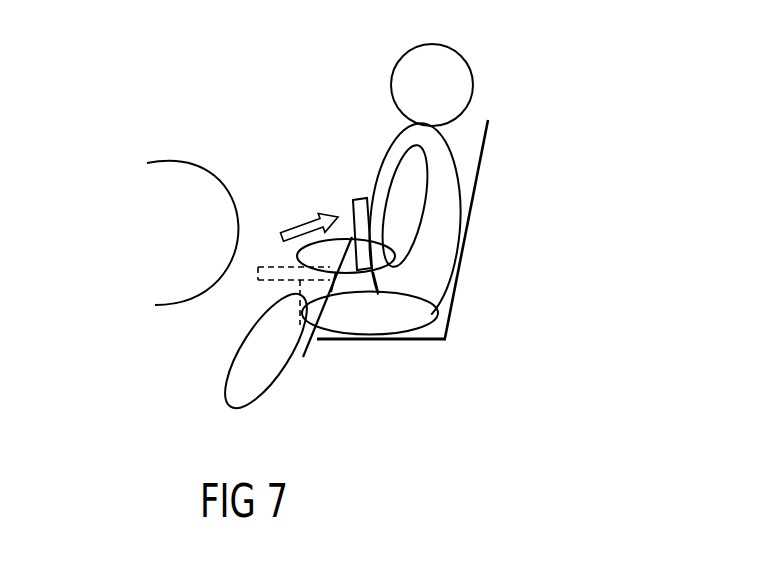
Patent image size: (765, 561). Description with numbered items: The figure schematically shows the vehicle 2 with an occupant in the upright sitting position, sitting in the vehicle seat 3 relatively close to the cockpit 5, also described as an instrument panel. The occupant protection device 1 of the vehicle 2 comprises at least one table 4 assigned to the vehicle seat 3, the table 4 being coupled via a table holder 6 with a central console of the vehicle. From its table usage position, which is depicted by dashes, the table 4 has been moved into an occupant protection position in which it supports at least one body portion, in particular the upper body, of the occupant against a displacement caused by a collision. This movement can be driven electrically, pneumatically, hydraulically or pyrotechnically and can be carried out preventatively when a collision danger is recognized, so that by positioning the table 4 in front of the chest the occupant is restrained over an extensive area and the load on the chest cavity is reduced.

The occupant protection device 1 is at (288, 108).
The vehicle 2 is at (557, 144).
The vehicle seat 3 is at (447, 339).
The table 4 is at (362, 198).
The cockpit 5 is at (165, 230).
The table holder 6 is at (305, 356).